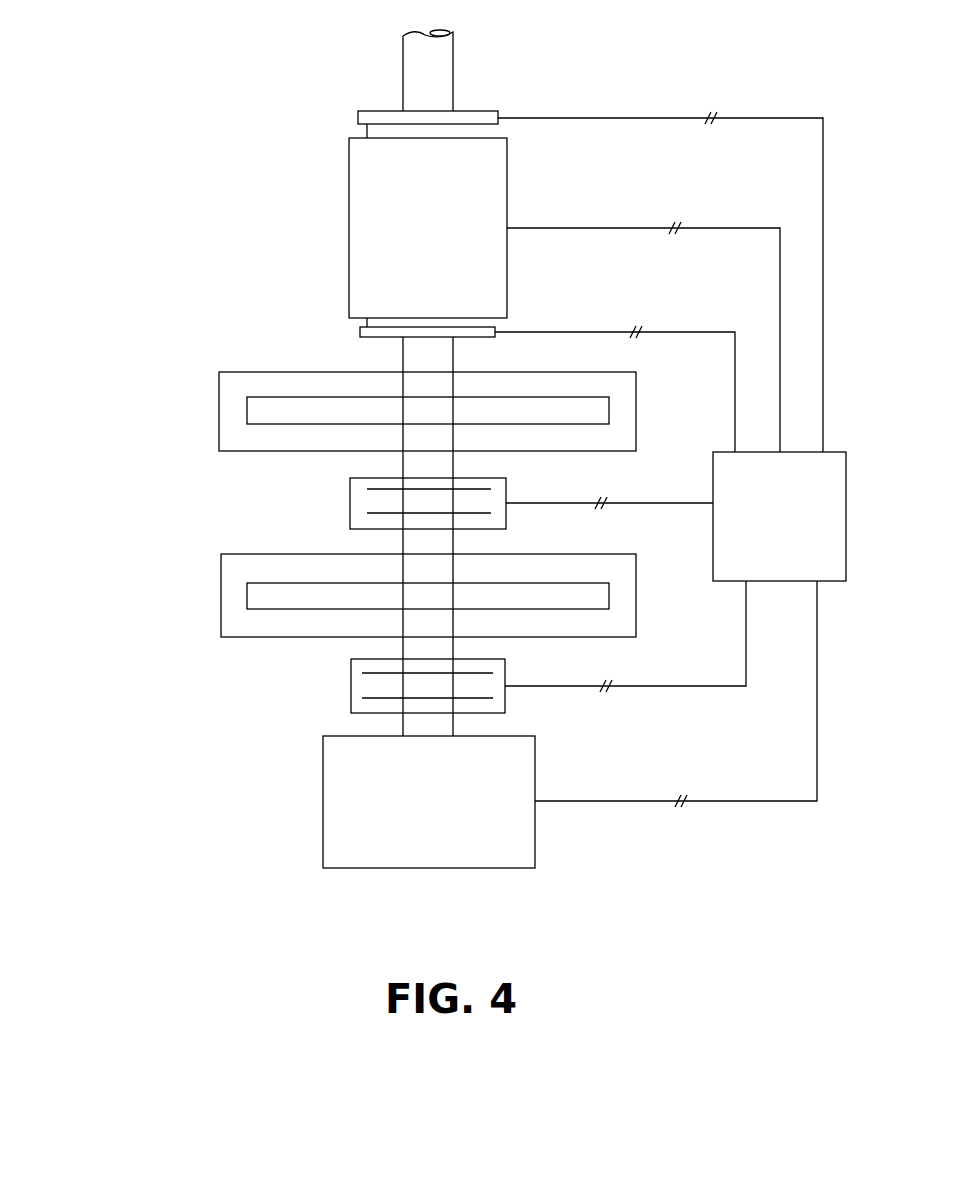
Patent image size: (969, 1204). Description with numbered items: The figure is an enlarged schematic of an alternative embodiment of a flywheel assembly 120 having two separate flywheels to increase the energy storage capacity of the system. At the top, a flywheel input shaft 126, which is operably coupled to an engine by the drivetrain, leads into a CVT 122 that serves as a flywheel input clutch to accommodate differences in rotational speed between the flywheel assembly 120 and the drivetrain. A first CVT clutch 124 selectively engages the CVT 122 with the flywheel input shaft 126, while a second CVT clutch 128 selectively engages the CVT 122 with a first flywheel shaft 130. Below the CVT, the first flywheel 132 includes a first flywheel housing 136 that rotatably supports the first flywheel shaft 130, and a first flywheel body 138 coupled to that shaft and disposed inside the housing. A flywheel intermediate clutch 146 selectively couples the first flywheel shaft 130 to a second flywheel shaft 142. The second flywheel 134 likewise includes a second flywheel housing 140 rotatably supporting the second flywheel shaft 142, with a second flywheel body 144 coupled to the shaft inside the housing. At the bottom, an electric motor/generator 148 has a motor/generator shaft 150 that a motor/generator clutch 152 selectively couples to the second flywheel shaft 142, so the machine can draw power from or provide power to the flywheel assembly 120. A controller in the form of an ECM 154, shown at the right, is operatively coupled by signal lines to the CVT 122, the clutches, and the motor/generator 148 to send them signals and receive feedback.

The flywheel assembly 120 is at (150, 746).
The CVT 122 is at (373, 183).
The first CVT clutch 124 is at (373, 119).
The flywheel input shaft 126 is at (412, 58).
The second CVT clutch 128 is at (360, 332).
The first flywheel shaft 130 is at (418, 365).
The first flywheel 132 is at (369, 394).
The second flywheel 134 is at (373, 574).
The first flywheel housing 136 is at (255, 372).
The first flywheel body 138 is at (290, 413).
The second flywheel housing 140 is at (221, 567).
The second flywheel shaft 142 is at (410, 543).
The second flywheel body 144 is at (265, 592).
The flywheel intermediate clutch 146 is at (362, 489).
The electric motor/generator 148 is at (355, 822).
The motor/generator shaft 150 is at (412, 728).
The motor/generator clutch 152 is at (355, 674).
The ECM 154 is at (761, 525).